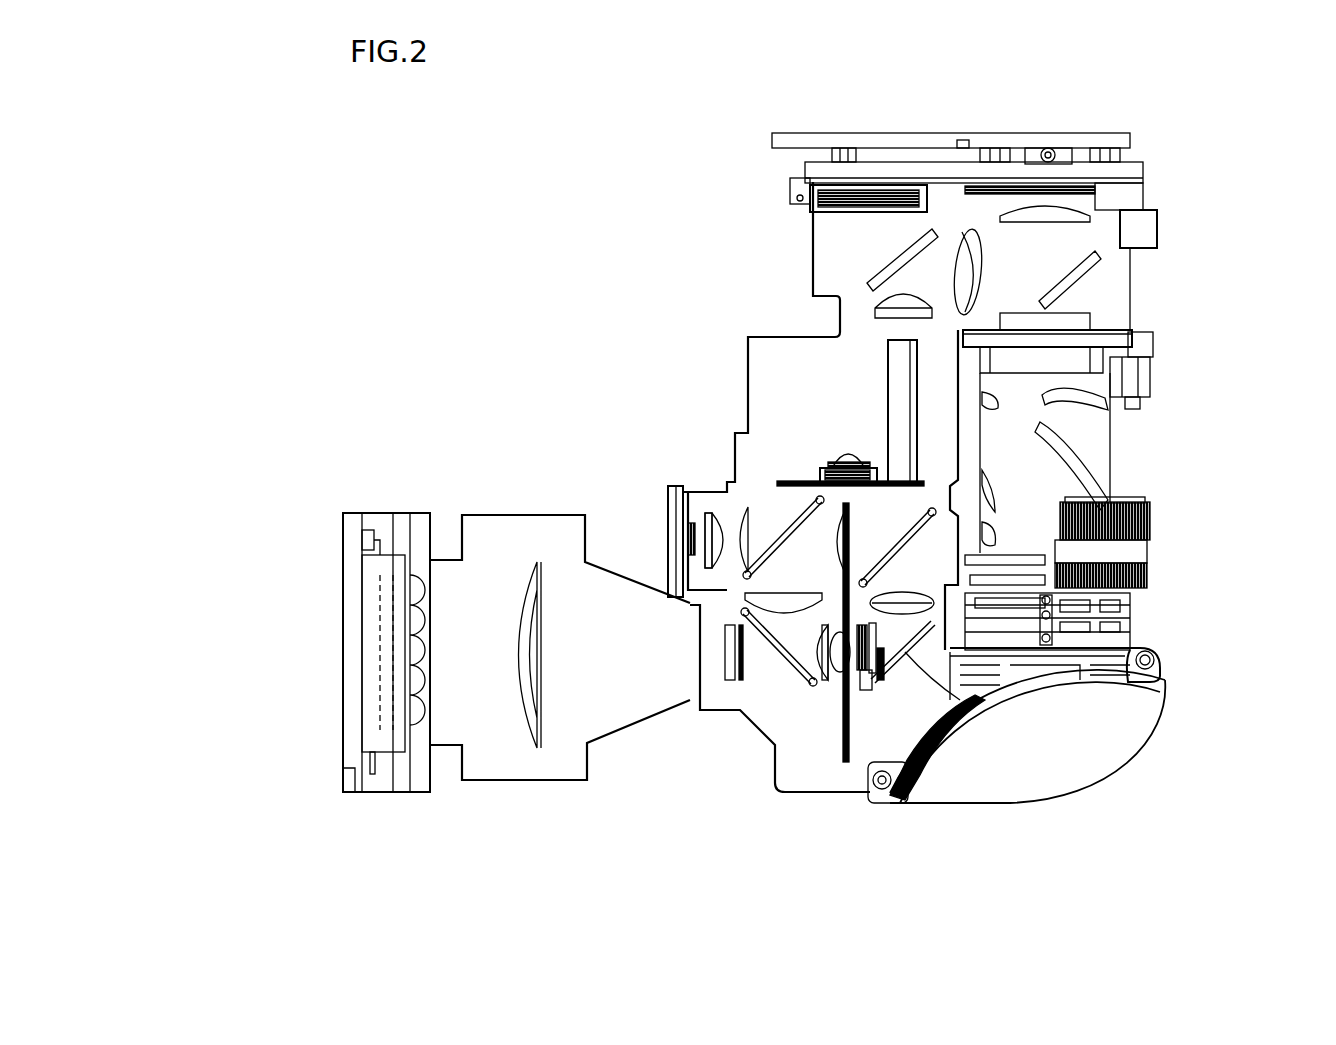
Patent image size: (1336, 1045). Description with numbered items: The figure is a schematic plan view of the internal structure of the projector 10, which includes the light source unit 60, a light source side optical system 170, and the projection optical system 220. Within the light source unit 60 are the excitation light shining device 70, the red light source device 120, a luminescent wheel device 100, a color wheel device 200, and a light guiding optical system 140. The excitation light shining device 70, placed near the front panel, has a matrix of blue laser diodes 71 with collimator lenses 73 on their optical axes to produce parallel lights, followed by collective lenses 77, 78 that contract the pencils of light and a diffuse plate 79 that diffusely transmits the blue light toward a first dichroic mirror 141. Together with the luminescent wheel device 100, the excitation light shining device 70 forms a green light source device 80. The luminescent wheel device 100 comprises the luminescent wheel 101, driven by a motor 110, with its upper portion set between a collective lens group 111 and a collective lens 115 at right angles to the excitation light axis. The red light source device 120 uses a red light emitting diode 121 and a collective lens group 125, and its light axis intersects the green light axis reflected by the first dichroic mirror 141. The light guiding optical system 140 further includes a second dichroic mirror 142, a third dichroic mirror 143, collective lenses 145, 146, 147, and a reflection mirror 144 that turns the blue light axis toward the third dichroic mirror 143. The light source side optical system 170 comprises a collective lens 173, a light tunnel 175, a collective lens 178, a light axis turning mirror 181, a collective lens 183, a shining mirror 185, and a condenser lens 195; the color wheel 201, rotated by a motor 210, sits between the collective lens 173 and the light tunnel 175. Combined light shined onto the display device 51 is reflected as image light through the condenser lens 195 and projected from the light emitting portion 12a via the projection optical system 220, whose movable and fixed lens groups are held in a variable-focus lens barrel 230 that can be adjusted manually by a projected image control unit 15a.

The projector 10 is at (1190, 170).
The light emitting portion 12a is at (1072, 735).
The projected image control unit 15a is at (1158, 552).
The display device 51 is at (1105, 205).
The light source unit 60 is at (567, 812).
The excitation light shining device 70 is at (422, 556).
The blue laser diodes 71 is at (378, 650).
The collimator lenses 73 is at (410, 592).
The collective lens 77 is at (518, 713).
The collective lens 78 is at (730, 685).
The diffuse plate 79 is at (745, 690).
The green light source device 80 is at (632, 656).
The luminescent wheel device 100 is at (858, 707).
The luminescent wheel 101 is at (850, 703).
The motor 110 is at (880, 690).
The collective lens group 111 is at (830, 695).
The collective lens 115 is at (908, 655).
The red light source device 120 is at (642, 480).
The red light emitting diode 121 is at (695, 546).
The collective lens group 125 is at (701, 512).
The light guiding optical system 140 is at (718, 683).
The first dichroic mirror 141 is at (790, 660).
The second dichroic mirror 142 is at (1063, 523).
The third dichroic mirror 143 is at (1148, 583).
The reflection mirror 144 is at (935, 675).
The collective lens 145 is at (775, 614).
The collective lens 146 is at (1060, 605).
The collective lens 147 is at (1060, 645).
The light source side optical system 170 is at (888, 233).
The collective lens 173 is at (800, 523).
The light tunnel 175 is at (888, 368).
The collective lens 178 is at (873, 313).
The light axis turning mirror 181 is at (893, 262).
The collective lens 183 is at (962, 258).
The shining mirror 185 is at (1095, 283).
The condenser lens 195 is at (1040, 210).
The color wheel device 200 is at (815, 447).
The color wheel 201 is at (797, 482).
The motor 210 is at (850, 445).
The projection optical system 220 is at (1087, 447).
The lens barrel 230 is at (1080, 427).